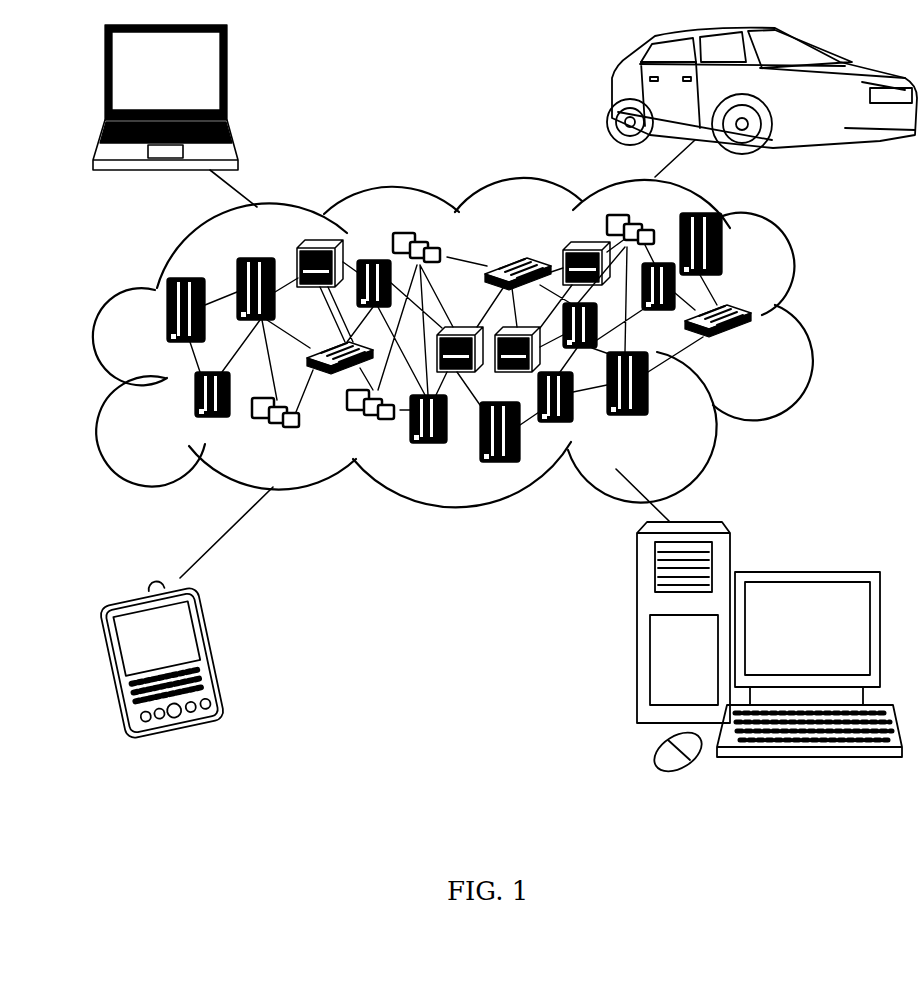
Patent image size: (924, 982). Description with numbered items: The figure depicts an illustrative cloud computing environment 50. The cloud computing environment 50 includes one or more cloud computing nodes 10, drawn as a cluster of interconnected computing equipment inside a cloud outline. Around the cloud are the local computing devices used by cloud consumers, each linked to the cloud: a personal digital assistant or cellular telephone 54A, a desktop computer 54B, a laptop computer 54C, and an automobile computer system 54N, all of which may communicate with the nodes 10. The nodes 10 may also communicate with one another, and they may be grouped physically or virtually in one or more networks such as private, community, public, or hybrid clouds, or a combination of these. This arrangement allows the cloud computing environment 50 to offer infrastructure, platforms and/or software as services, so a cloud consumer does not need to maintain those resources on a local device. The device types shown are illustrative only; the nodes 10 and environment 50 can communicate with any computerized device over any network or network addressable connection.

The cloud computing environment 50 is at (805, 315).
The cloud computing nodes 10 is at (752, 345).
The personal digital assistant or cellular telephone 54A is at (220, 656).
The desktop computer 54B is at (803, 572).
The laptop computer 54C is at (228, 78).
The automobile computer system 54N is at (612, 92).